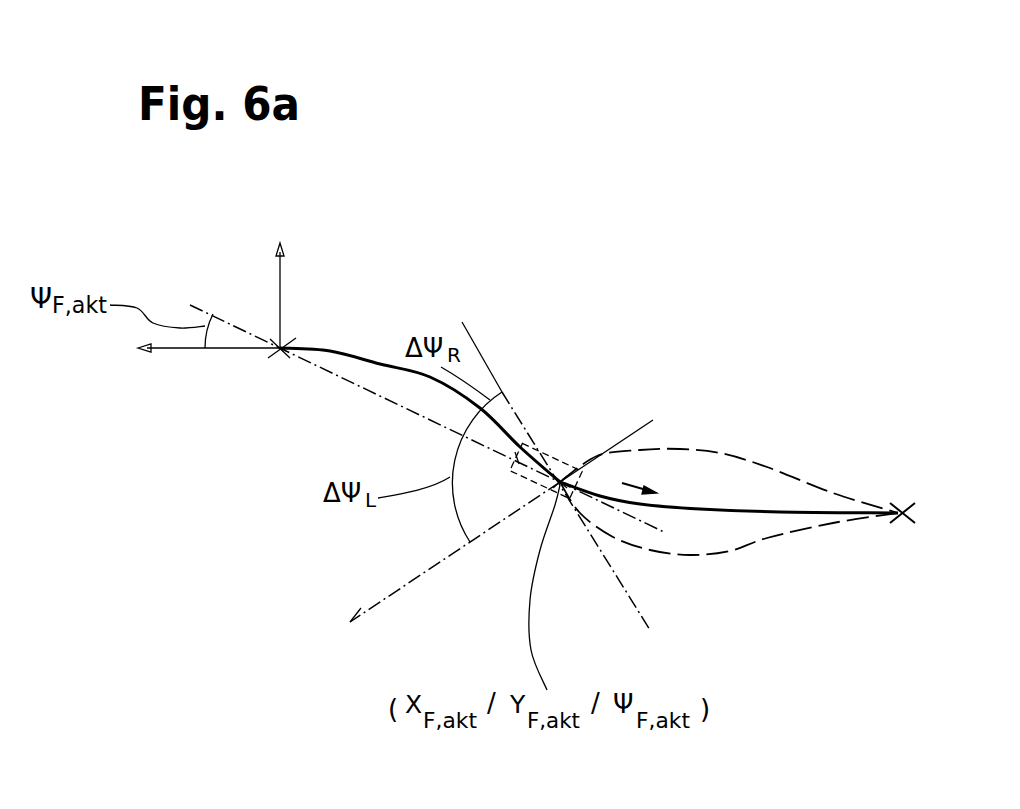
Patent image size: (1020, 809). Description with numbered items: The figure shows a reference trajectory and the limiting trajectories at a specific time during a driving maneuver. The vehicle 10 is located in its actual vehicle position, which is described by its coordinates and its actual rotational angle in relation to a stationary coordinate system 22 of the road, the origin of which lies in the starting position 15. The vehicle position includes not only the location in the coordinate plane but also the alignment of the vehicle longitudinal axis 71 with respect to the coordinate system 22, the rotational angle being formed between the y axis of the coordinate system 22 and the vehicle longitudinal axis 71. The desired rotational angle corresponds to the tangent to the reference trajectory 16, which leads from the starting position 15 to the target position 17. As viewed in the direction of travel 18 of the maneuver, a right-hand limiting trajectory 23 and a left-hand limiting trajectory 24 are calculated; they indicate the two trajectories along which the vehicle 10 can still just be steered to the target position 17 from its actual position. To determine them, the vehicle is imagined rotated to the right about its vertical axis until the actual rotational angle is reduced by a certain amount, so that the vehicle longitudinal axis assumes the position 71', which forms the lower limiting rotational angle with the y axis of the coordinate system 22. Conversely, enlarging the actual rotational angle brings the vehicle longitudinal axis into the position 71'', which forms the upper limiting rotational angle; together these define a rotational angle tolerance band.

The vehicle 10 is at (547, 452).
The starting position 15 is at (278, 355).
The reference trajectory 16 is at (387, 362).
The target position 17 is at (897, 520).
The direction of travel 18 is at (624, 478).
The coordinate system 22 is at (284, 281).
The right-hand limiting trajectory 23 is at (771, 540).
The left-hand limiting trajectory 24 is at (829, 490).
The vehicle longitudinal axis 71 is at (427, 418).
The vehicle longitudinal axis (rotated to the right) 71' is at (556, 434).
The vehicle longitudinal axis (rotated to the left) 71'' is at (449, 521).